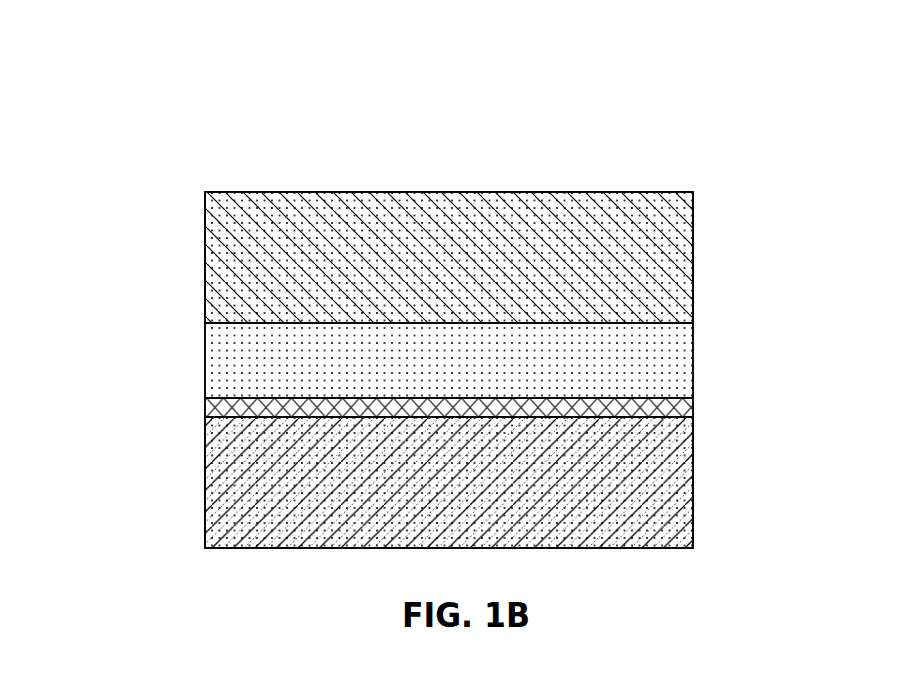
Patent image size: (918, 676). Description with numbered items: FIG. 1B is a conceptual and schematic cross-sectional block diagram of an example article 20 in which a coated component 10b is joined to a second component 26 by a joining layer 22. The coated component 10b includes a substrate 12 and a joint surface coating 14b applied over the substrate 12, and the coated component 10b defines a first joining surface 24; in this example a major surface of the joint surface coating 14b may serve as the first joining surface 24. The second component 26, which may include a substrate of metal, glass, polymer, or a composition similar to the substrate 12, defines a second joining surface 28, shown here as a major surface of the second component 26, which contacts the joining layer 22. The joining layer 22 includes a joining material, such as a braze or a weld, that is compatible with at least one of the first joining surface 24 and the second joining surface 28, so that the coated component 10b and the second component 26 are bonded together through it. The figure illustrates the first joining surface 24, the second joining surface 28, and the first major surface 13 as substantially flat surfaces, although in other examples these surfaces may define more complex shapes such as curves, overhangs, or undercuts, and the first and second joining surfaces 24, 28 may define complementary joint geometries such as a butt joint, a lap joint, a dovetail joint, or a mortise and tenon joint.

The article 20 is at (137, 73).
The second component 26 is at (205, 231).
The joining layer 22 is at (205, 352).
The second joining surface 28 is at (577, 323).
The first joining surface 24 is at (568, 398).
The joint surface coating 14b is at (693, 403).
The substrate 12 is at (693, 497).
The coated component 10b is at (484, 473).
The first major surface 13 is at (457, 412).